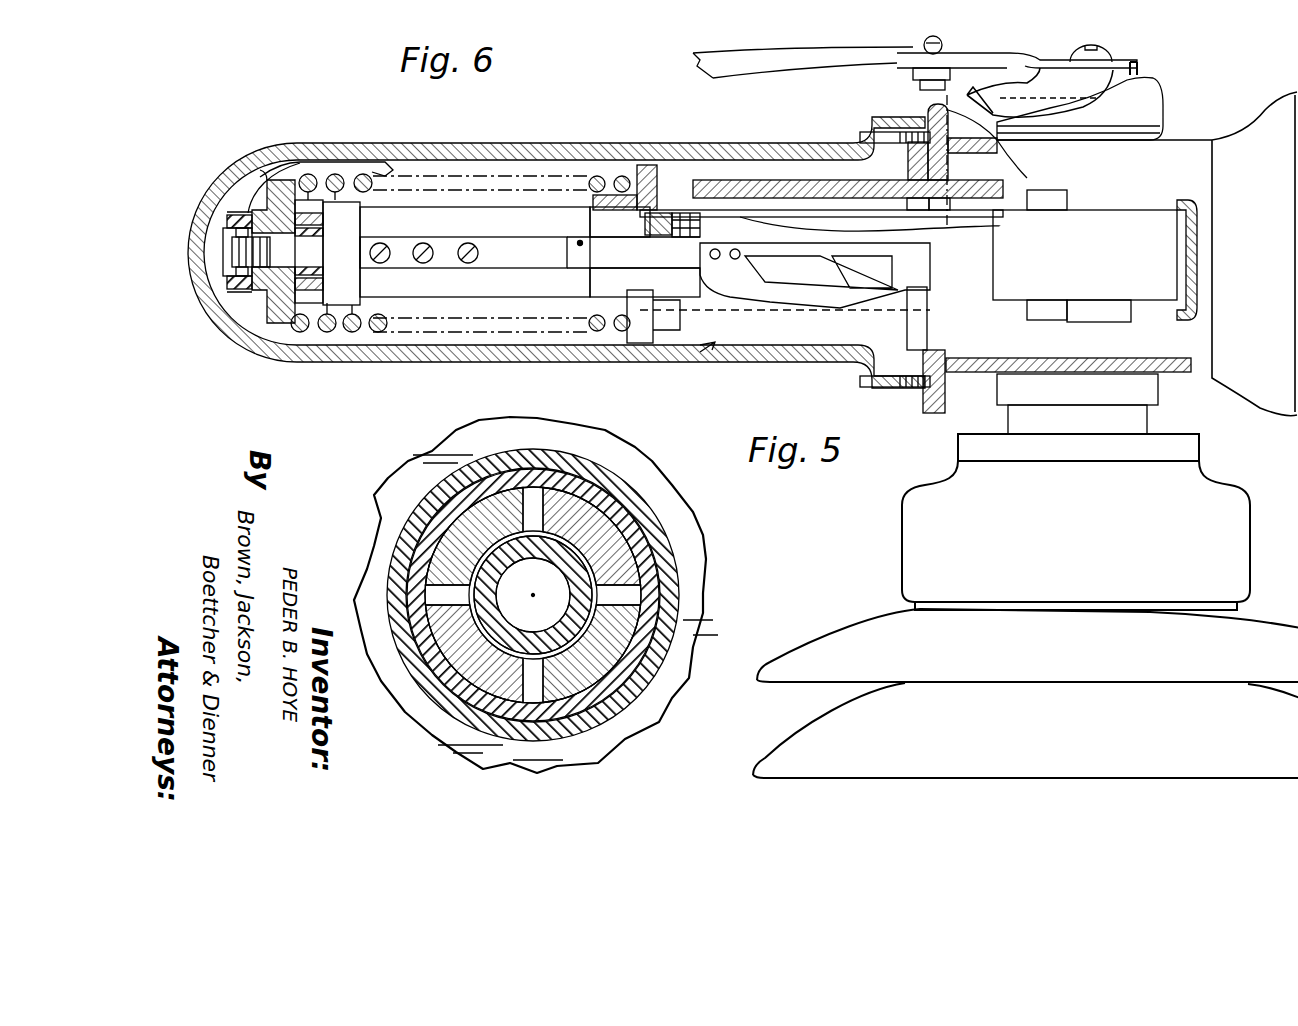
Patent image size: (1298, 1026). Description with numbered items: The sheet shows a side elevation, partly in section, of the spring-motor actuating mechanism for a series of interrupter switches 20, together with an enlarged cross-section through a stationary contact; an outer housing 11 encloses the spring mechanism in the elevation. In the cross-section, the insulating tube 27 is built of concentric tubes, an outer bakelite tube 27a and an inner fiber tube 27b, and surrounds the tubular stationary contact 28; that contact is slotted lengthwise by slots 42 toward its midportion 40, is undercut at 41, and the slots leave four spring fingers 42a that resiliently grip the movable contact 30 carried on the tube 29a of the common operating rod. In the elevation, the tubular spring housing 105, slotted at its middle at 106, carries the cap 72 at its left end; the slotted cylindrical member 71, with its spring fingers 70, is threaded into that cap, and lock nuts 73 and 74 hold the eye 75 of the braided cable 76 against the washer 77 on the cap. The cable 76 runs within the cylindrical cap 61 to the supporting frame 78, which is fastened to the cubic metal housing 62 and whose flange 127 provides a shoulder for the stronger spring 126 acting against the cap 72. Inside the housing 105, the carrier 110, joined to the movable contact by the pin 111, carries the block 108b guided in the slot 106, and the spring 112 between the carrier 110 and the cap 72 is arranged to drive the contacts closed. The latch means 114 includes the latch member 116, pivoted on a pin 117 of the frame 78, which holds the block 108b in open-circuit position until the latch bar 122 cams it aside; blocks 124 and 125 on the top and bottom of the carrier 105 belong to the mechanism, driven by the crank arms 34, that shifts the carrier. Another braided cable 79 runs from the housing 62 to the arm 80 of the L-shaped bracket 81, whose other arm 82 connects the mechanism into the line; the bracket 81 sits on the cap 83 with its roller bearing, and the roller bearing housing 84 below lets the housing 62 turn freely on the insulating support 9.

In FIG. 6, the insulating support 9 is at (882, 504).
In FIG. 6, the housing 11 is at (540, 362).
In FIG. 6, the interrupter switch 20 is at (1297, 68).
In FIG. 5, the insulating tube 27 is at (553, 595).
In FIG. 5, the bakelite tube 27a is at (649, 442).
In FIG. 5, the fiber tube 27b is at (680, 475).
In FIG. 5, the stationary contact 28 is at (531, 595).
In FIG. 5, the tube of the common operating rod 29a is at (533, 595).
In FIG. 5, the movable contact 30 is at (565, 620).
In FIG. 6, the crank arm 34 is at (1040, 192).
In FIG. 5, the midportion 40 is at (533, 571).
In FIG. 5, the undercut 41 is at (606, 595).
In FIG. 5, the slot 42 is at (531, 611).
In FIG. 5, the spring finger 42a is at (529, 604).
In FIG. 6, the cylindrical cap 61 is at (562, 150).
In FIG. 6, the cubic metal housing 62 is at (948, 124).
In FIG. 6, the spring fingers 70 is at (326, 252).
In FIG. 6, the slotted cylindrical member 71 is at (225, 240).
In FIG. 6, the cap 72 is at (272, 323).
In FIG. 6, the lock nut 73 is at (235, 283).
In FIG. 6, the lock nut 74 is at (232, 292).
In FIG. 6, the eye of braided cable 75 is at (245, 288).
In FIG. 6, the braided cable 76 is at (310, 168).
In FIG. 6, the washer 77 is at (248, 213).
In FIG. 6, the supporting frame 78 is at (808, 178).
In FIG. 6, the braided cable 79 is at (1085, 86).
In FIG. 6, the arm of L-shaped bracket 80 is at (1138, 66).
In FIG. 6, the L-shaped bracket 81 is at (1040, 62).
In FIG. 6, the arm of bracket 82 is at (963, 58).
In FIG. 6, the cap 83 is at (1155, 115).
In FIG. 6, the roller bearing housing 84 is at (1150, 392).
In FIG. 6, the spring housing 105 is at (452, 210).
In FIG. 6, the slotted portion 106 is at (575, 240).
In FIG. 6, the metal block 108b is at (640, 286).
In FIG. 6, the carrier 110 is at (620, 250).
In FIG. 6, the pin 111 is at (645, 222).
In FIG. 6, the spring 112 is at (270, 200).
In FIG. 6, the latch means 114 is at (702, 368).
In FIG. 6, the latch member 116 is at (690, 245).
In FIG. 6, the pin 117 is at (765, 303).
In FIG. 6, the latch bar 122 is at (515, 262).
In FIG. 6, the block 124 is at (1160, 198).
In FIG. 6, the block 125 is at (1095, 318).
In FIG. 6, the spring 126 is at (377, 333).
In FIG. 6, the flange 127 is at (648, 165).